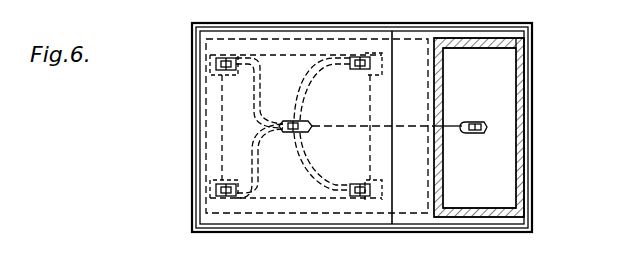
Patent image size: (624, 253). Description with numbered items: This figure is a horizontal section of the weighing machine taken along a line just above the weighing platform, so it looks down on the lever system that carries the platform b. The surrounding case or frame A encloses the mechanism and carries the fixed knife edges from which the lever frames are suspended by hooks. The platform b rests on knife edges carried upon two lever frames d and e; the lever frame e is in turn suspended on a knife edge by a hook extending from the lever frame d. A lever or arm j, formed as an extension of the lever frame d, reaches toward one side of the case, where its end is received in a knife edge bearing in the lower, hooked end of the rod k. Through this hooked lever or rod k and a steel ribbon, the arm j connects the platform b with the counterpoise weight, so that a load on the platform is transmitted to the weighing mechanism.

The platform b is at (296, 126).
The lever frame d is at (260, 92).
The lever frame e is at (306, 88).
The lever or arm j is at (448, 128).
The hooked lever or rod k is at (486, 124).
The case or frame A is at (432, 165).